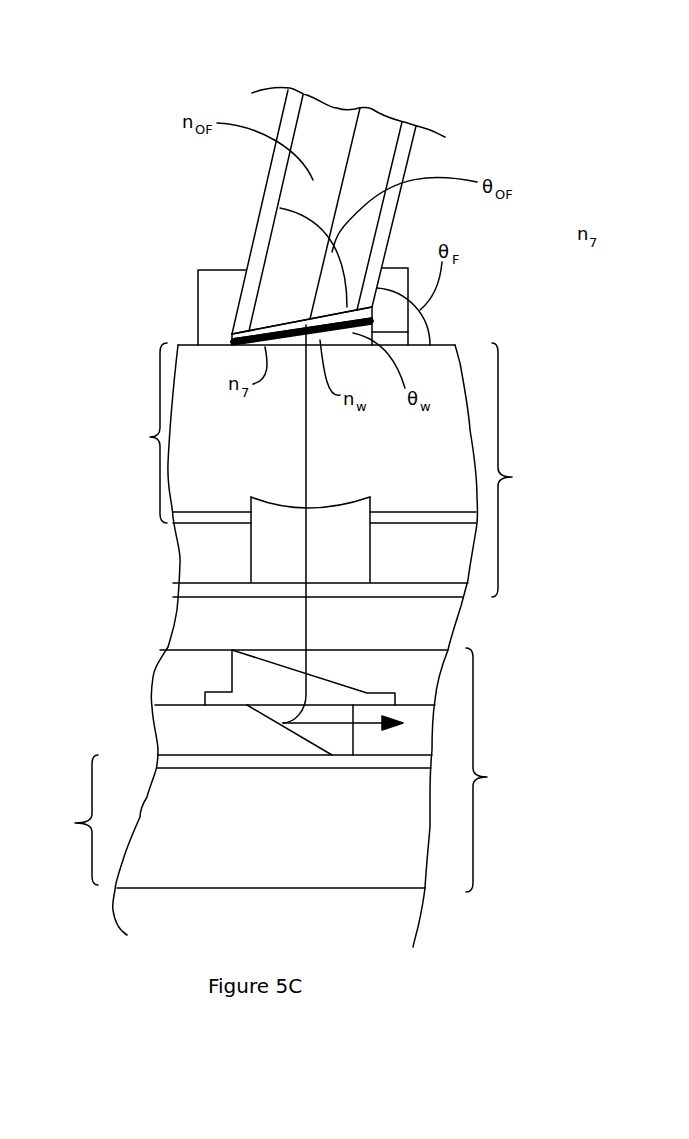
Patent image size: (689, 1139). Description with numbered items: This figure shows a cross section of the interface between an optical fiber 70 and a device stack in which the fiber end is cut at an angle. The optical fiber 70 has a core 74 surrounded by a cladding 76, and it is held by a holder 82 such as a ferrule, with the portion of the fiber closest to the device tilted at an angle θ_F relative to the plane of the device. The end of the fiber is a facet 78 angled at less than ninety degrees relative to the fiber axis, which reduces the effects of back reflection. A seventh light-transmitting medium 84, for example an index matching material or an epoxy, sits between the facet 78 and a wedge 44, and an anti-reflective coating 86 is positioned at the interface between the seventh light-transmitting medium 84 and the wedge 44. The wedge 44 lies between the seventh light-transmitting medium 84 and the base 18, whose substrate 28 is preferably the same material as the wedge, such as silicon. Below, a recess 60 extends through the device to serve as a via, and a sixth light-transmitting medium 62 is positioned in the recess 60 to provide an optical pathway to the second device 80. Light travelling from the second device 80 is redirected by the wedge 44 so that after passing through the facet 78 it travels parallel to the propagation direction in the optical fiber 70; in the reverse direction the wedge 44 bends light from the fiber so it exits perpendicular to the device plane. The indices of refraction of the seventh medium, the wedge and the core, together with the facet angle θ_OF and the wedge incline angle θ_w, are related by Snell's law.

The optical fiber 70 is at (466, 146).
The core 74 is at (332, 122).
The cladding 76 is at (297, 103).
The holder 82 is at (227, 270).
The facet 78 is at (290, 318).
The seventh light-transmitting medium 84 is at (232, 336).
The anti-reflective coating 86 is at (232, 341).
The base 18 is at (259, 645).
The substrate 28 is at (437, 446).
The recess 60 is at (370, 567).
The sixth light-transmitting medium 62 is at (333, 530).
The second device 80 is at (338, 770).
The wedge 44 is at (338, 683).